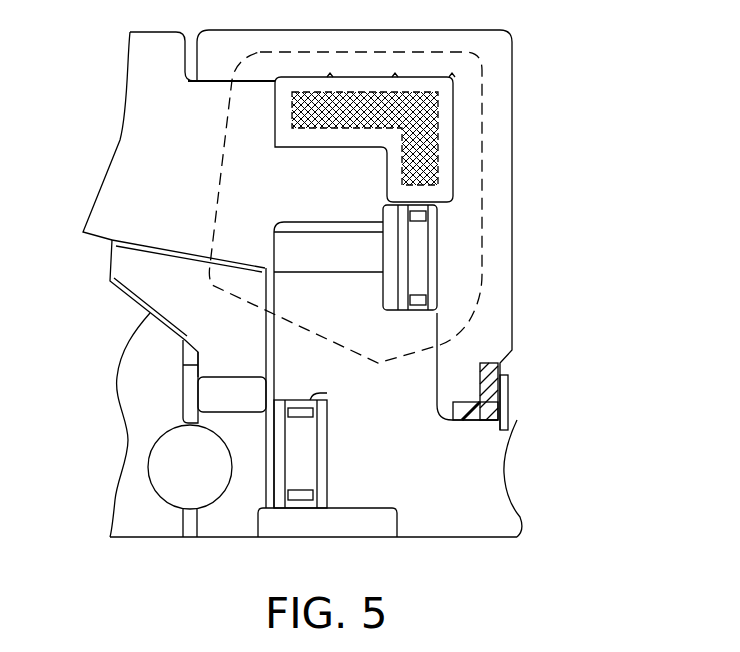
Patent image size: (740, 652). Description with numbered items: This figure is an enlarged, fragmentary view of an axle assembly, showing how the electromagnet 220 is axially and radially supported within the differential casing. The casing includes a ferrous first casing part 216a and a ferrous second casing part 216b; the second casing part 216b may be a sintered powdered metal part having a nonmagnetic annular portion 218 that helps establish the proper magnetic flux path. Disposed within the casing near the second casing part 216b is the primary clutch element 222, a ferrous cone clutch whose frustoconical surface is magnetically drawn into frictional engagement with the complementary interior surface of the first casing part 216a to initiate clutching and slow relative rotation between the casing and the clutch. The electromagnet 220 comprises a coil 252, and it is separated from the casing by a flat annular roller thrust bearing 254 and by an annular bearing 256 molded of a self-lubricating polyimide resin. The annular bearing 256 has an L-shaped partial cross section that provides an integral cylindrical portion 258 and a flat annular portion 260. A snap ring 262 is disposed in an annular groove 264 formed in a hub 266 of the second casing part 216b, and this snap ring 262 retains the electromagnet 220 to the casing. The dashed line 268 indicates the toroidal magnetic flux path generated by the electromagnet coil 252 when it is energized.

The first casing part 216a is at (113, 192).
The second casing part 216b is at (450, 515).
The nonmagnetic annular portion 218 is at (297, 258).
The electromagnet 220 is at (498, 213).
The primary clutch element 222 is at (140, 277).
The coil 252 is at (427, 120).
The flat annular roller thrust bearing 254 is at (425, 266).
The annular bearing 256 is at (458, 386).
The cylindrical portion 258 is at (465, 418).
The flat annular portion 260 is at (493, 393).
The snap ring 262 is at (507, 412).
The annular groove 264 is at (498, 430).
The hub 266 is at (498, 505).
The line 268 is at (482, 166).